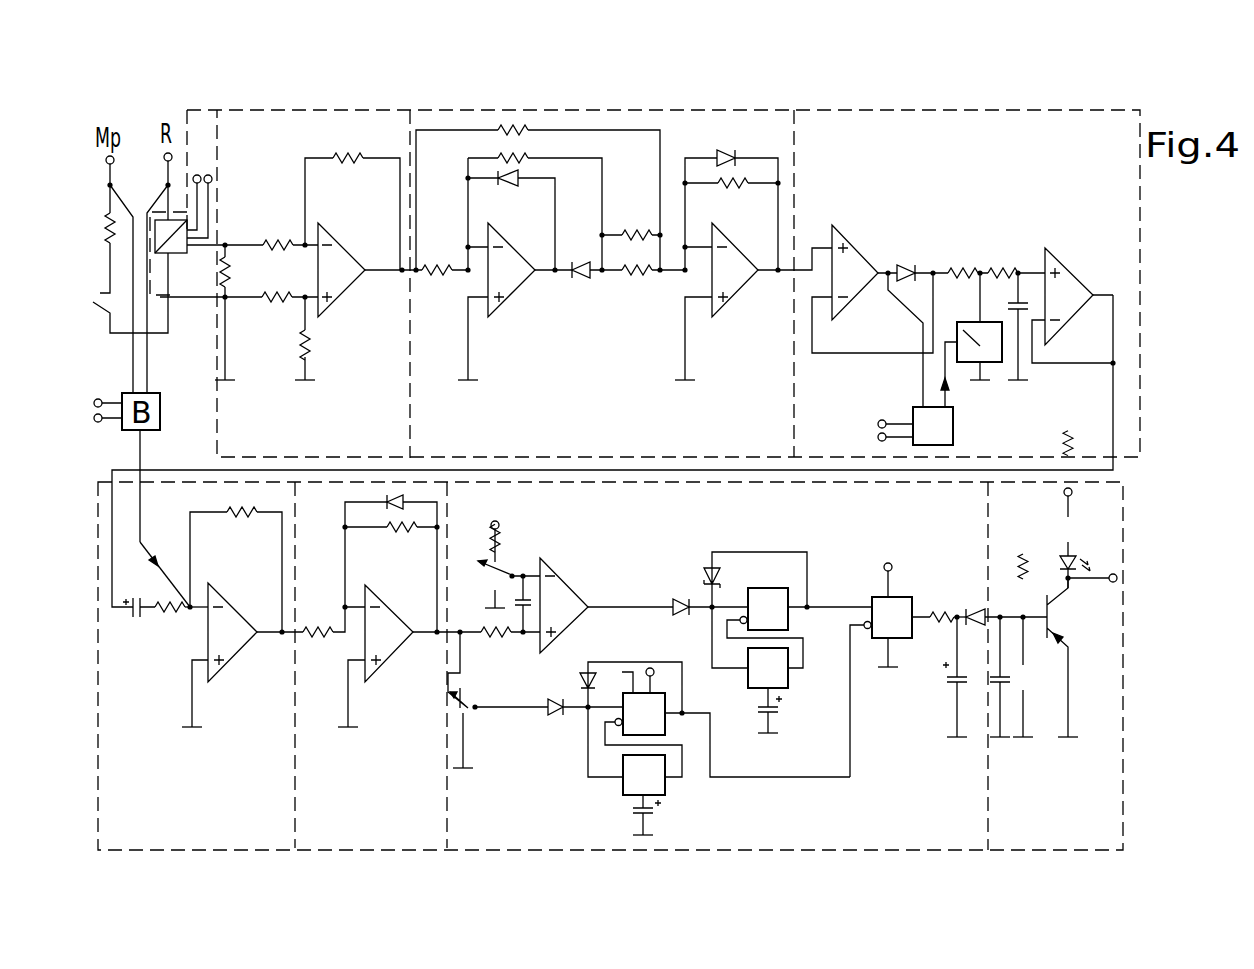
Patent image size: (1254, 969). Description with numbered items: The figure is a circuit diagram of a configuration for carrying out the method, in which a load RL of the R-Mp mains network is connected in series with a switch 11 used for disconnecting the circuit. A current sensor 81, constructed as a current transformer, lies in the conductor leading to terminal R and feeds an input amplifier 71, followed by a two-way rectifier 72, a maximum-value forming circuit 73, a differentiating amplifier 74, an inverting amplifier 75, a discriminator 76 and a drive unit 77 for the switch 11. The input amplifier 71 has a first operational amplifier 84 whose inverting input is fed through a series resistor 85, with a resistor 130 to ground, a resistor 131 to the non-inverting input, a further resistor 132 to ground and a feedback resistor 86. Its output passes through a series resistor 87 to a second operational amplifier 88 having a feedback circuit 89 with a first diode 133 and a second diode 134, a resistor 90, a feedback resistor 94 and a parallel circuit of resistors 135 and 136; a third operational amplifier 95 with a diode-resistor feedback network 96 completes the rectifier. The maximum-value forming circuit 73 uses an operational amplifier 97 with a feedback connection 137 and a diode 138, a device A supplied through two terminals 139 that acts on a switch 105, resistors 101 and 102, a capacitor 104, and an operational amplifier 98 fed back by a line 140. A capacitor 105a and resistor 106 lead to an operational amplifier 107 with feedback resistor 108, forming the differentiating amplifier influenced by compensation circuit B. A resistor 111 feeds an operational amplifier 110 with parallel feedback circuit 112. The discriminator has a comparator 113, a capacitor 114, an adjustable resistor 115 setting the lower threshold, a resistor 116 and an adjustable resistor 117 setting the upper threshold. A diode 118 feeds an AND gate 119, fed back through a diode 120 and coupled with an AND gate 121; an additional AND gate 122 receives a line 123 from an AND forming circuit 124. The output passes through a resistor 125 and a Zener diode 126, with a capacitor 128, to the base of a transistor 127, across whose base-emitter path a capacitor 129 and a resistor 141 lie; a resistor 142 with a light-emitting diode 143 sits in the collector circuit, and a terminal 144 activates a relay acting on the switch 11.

The load RL is at (107, 220).
The switch 11 is at (98, 290).
The input amplifier 71 is at (287, 123).
The two-way rectifier 72 is at (580, 112).
The maximum-value forming circuit 73 is at (917, 117).
The differentiating amplifier 74 is at (98, 497).
The inverting amplifier 75 is at (342, 802).
The discriminator 76 is at (907, 517).
The drive unit 77 is at (1115, 531).
The current sensor 81 is at (155, 240).
The first operational amplifier 84 is at (342, 257).
The series resistor 85 is at (278, 240).
The feedback resistor 86 is at (340, 157).
The series resistor 87 is at (437, 268).
The second operational amplifier 88 is at (490, 223).
The feedback circuit 89 is at (612, 125).
The resistor 90 is at (518, 157).
The feedback resistor 94 is at (503, 128).
The third operational amplifier 95 is at (745, 267).
The parallel circuit of a diode and a resistor 96 is at (745, 145).
The operational amplifier 97 is at (852, 253).
The operational amplifier 98 is at (1073, 283).
The resistor 101 is at (957, 268).
The resistor 102 is at (993, 268).
The capacitor 104 is at (1027, 302).
The switch 105 is at (988, 350).
The capacitor 105a is at (128, 617).
The resistor 106 is at (168, 612).
The operational amplifier 107 is at (213, 597).
The resistor 108 is at (238, 510).
The operational amplifier 110 is at (390, 650).
The resistor 111 is at (295, 658).
The feedback circuit 112 is at (440, 510).
The comparator 113 is at (568, 597).
The capacitor 114 is at (540, 558).
The adjustable resistor 115 is at (512, 576).
The resistor 116 is at (497, 636).
The adjustable resistor 117 is at (467, 713).
The diode 118 is at (677, 597).
The AND gate 119 is at (778, 597).
The diode 120 is at (715, 570).
The AND gate 121 is at (783, 680).
The AND gate 122 is at (912, 603).
The line 123 is at (850, 733).
The AND forming circuit 124 is at (693, 782).
The resistor 125 is at (938, 617).
The Zener diode 126 is at (987, 607).
The transistor 127 is at (1060, 618).
The capacitor 128 is at (960, 690).
The capacitor 129 is at (1007, 685).
The resistor 130 is at (240, 257).
The resistor 131 is at (262, 297).
The resistor 132 is at (297, 348).
The first diode 133 is at (523, 175).
The second diode 134 is at (588, 293).
The resistor 135 is at (638, 235).
The resistor 136 is at (635, 273).
The feedback connection 137 is at (858, 357).
The diode 138 is at (903, 267).
The terminals 139 is at (878, 436).
The line 140 is at (1082, 367).
The resistor 141 is at (1027, 670).
The resistor 142 is at (1070, 523).
The light-emitting diode 143 is at (1087, 562).
The terminal 144 is at (1117, 578).